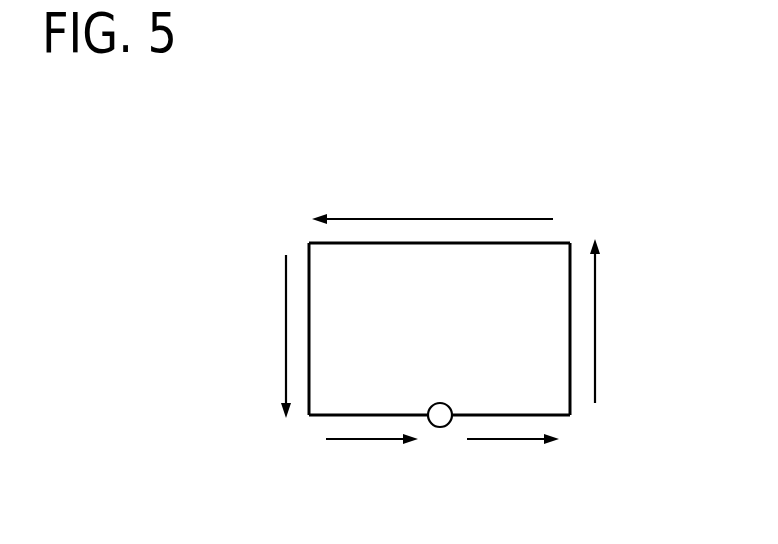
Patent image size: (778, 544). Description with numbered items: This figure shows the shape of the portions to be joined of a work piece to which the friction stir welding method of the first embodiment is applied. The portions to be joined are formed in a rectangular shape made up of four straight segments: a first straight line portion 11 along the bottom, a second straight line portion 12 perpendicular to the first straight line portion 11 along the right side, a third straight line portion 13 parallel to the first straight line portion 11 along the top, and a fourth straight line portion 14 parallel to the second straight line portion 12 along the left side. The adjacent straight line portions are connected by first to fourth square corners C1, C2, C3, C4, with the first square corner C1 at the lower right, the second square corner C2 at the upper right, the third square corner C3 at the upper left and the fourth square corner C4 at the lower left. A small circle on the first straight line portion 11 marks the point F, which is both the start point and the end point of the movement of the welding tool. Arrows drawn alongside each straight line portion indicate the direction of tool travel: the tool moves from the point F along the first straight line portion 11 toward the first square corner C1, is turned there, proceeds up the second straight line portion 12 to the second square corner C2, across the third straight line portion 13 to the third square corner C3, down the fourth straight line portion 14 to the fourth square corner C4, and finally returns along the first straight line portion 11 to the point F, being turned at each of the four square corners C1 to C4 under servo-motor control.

The first straight line portion 11 is at (462, 417).
The second straight line portion 12 is at (572, 407).
The third straight line portion 13 is at (560, 243).
The fourth straight line portion 14 is at (309, 257).
The start point and end point F is at (438, 427).
The first square corner C1 is at (570, 417).
The second square corner C2 is at (570, 243).
The third square corner C3 is at (308, 243).
The fourth square corner C4 is at (308, 417).